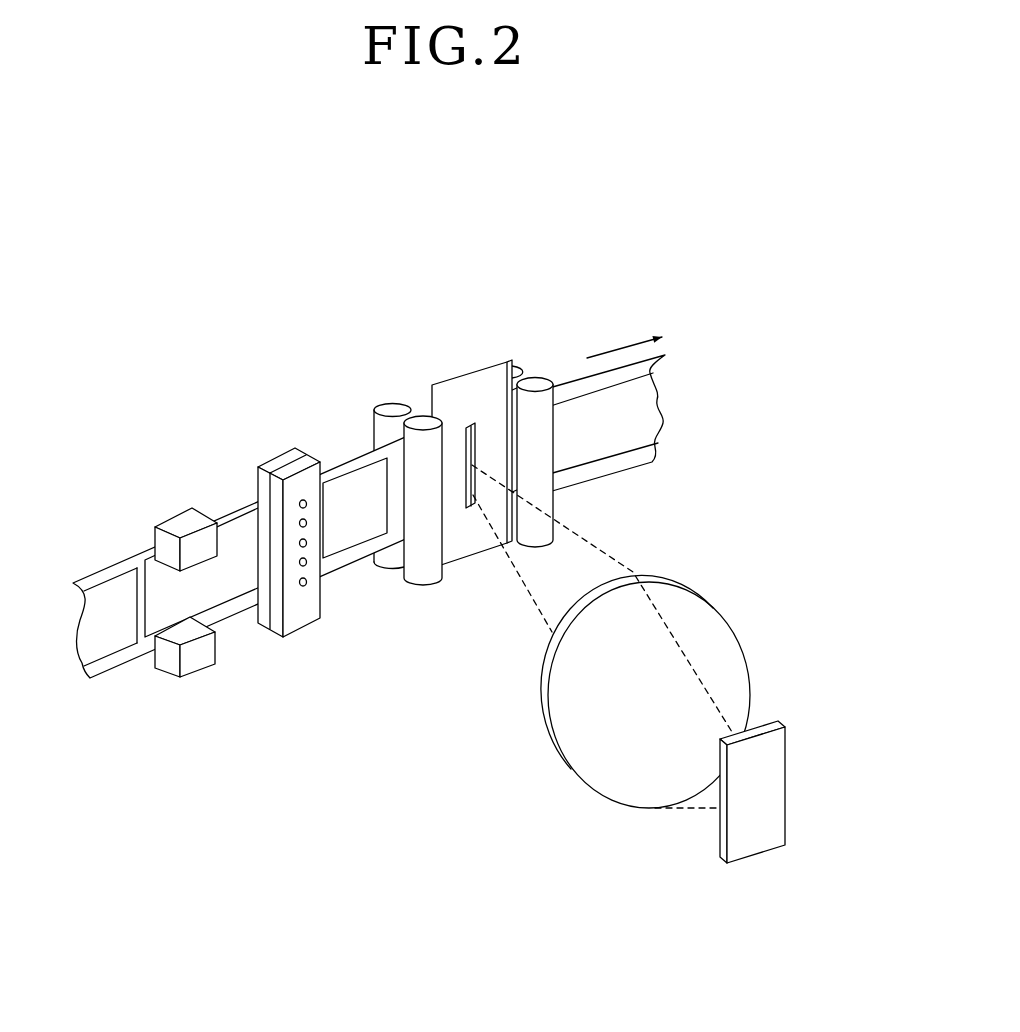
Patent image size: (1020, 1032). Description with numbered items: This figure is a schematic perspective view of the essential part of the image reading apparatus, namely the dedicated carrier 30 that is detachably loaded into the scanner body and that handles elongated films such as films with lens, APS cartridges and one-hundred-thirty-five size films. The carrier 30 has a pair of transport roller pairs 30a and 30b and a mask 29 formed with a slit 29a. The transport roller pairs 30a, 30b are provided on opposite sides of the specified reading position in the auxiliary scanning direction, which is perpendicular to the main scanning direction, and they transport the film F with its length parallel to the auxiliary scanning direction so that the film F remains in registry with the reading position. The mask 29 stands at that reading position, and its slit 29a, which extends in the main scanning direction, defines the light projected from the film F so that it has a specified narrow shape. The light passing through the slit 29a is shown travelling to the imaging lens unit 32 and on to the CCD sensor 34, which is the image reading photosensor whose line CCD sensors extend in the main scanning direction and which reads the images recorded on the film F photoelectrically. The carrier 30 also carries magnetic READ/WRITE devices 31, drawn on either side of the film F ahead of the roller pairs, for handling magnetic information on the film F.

The mask 29 is at (497, 464).
The slit 29a is at (470, 424).
The carrier 30 is at (397, 366).
The transport roller pair 30a is at (420, 568).
The transport roller pair 30b is at (556, 471).
The magnetic READ/WRITE device 31 is at (182, 525).
The imaging lens unit 32 is at (697, 618).
The CCD sensor 34 is at (765, 783).
The film F is at (638, 370).